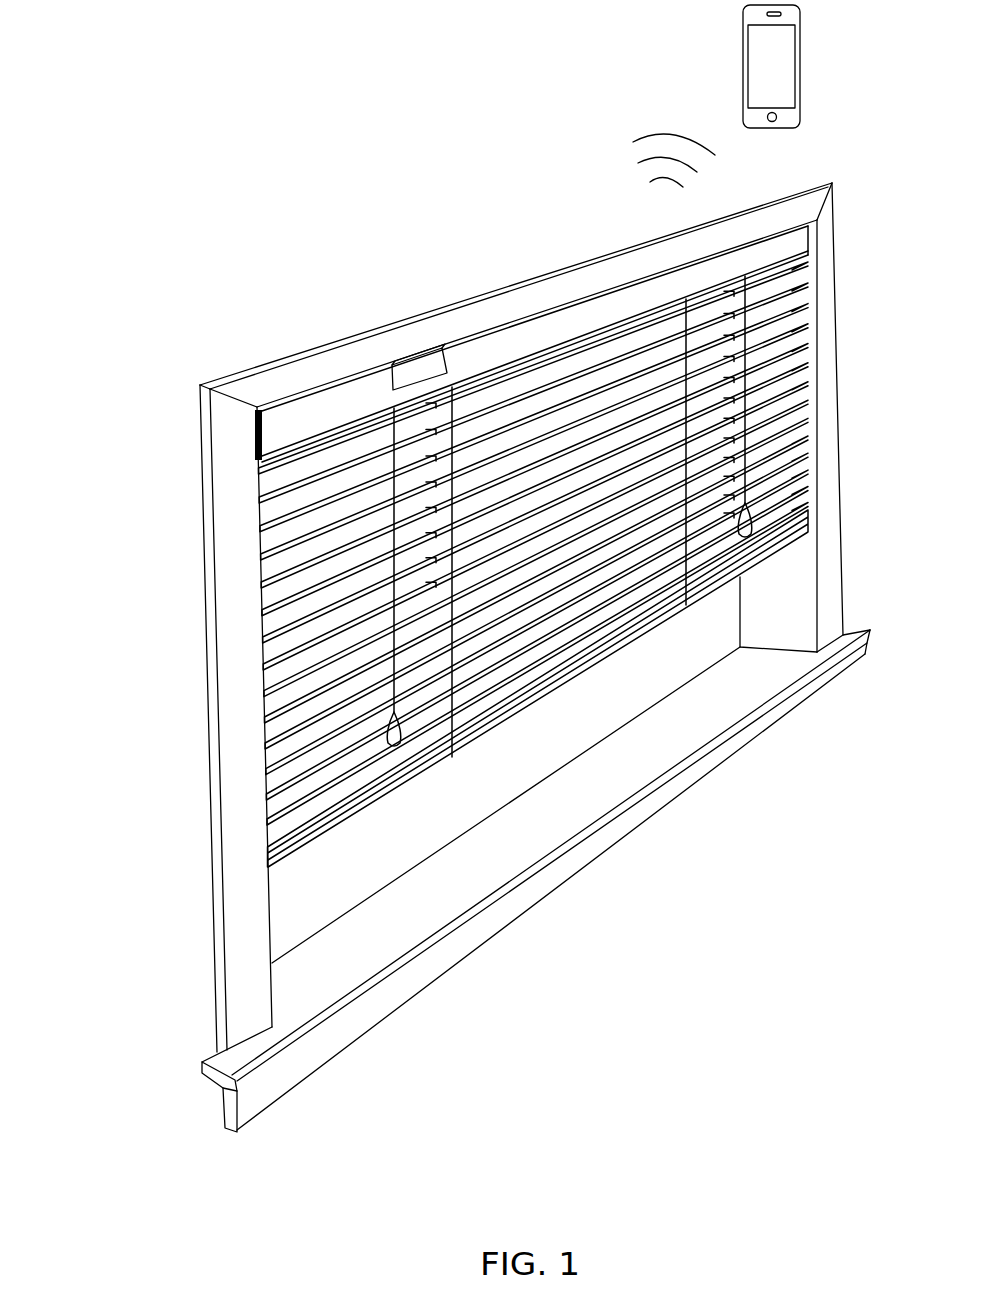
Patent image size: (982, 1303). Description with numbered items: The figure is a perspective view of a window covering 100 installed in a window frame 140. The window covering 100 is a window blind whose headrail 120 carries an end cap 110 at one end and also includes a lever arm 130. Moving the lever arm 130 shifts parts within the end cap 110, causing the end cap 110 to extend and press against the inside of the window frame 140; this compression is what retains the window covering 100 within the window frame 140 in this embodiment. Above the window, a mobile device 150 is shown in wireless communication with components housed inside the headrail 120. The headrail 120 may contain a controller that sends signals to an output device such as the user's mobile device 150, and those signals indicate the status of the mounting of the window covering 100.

The window covering 100 is at (208, 187).
The end cap 110 is at (258, 440).
The headrail 120 is at (575, 330).
The lever arm 130 is at (423, 370).
The window frame 140 is at (804, 625).
The mobile device 150 is at (743, 37).